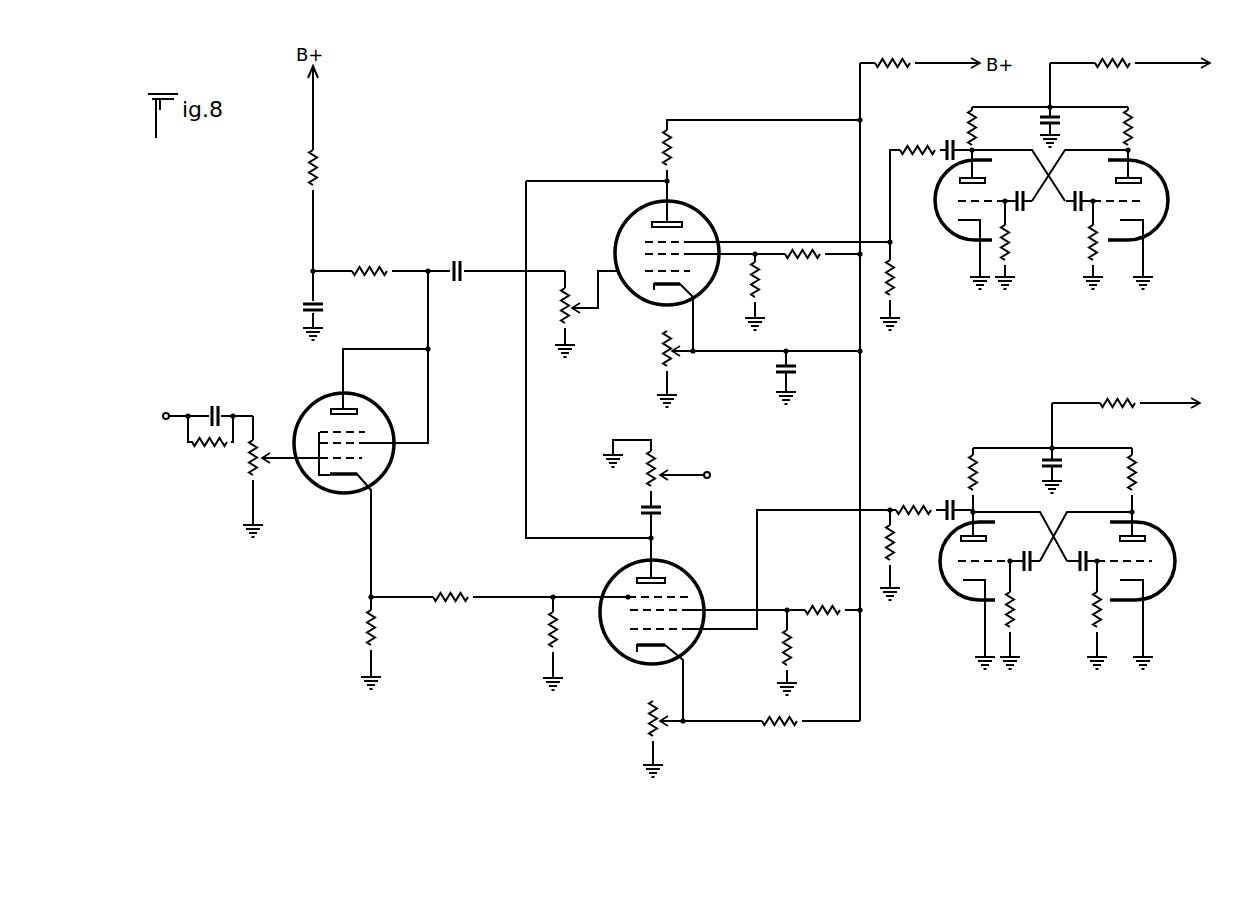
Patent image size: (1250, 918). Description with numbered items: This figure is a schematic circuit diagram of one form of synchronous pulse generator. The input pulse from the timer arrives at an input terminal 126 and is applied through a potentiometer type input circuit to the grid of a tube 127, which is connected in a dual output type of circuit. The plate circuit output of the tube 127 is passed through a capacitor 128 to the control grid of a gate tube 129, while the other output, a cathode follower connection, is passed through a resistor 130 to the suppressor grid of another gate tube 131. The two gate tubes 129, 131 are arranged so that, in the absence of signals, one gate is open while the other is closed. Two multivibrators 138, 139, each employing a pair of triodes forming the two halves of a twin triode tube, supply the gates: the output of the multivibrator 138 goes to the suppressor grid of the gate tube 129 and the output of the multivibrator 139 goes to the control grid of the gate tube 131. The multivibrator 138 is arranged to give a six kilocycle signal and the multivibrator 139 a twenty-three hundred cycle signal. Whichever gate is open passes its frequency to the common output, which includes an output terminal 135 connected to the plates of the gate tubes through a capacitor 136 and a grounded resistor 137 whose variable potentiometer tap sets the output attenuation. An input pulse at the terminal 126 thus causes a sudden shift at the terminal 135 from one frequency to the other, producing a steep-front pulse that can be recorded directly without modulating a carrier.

The input terminal 126 is at (164, 421).
The tube 127 is at (380, 471).
The capacitor 128 is at (462, 258).
The gate tube 129 is at (700, 221).
The resistor 130 is at (465, 590).
The gate tube 131 is at (678, 578).
The output terminal 135 is at (720, 457).
The capacitor 136 is at (668, 511).
The grounded resistor 137 is at (656, 463).
The multivibrator 138 is at (1198, 134).
The multivibrator 139 is at (1226, 494).